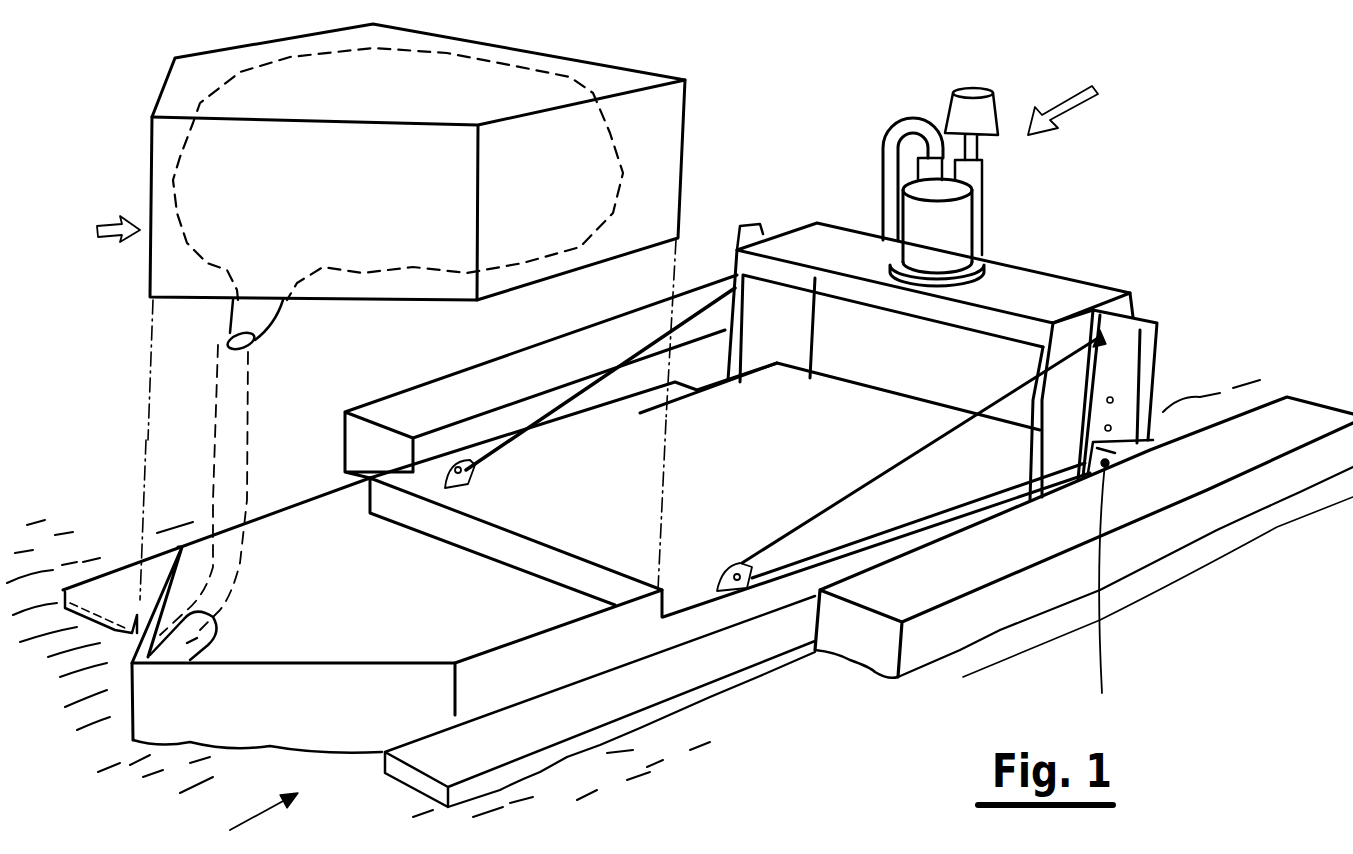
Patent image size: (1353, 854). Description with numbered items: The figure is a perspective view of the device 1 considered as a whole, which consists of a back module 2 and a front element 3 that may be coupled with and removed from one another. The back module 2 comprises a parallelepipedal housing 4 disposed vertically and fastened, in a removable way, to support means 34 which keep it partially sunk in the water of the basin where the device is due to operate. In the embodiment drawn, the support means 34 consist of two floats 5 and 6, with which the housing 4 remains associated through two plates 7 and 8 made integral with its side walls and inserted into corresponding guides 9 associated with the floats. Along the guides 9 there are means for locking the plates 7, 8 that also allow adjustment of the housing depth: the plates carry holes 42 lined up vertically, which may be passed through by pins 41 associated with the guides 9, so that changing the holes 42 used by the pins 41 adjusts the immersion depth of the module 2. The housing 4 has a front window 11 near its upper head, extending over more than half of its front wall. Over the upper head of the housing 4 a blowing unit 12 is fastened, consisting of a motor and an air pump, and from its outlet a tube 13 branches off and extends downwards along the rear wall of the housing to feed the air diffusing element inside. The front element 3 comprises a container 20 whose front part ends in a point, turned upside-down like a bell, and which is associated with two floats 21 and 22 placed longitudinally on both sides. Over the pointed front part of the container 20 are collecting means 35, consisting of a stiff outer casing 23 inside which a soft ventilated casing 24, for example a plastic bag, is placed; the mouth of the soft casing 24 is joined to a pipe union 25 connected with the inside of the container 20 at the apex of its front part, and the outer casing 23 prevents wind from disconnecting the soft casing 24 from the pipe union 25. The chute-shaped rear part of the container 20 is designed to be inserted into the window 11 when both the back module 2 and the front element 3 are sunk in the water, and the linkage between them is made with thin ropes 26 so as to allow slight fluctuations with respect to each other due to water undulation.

The device 1 is at (1067, 100).
The back module 2 is at (1135, 283).
The front element 3 is at (514, 720).
The housing 4 is at (1063, 290).
The float 5 is at (417, 413).
The float 6 is at (1302, 423).
The plate 7 is at (760, 228).
The plate 8 is at (1165, 330).
The guides 9 is at (1150, 447).
The front window 11 is at (875, 355).
The blowing unit 12 is at (997, 187).
The tube 13 is at (893, 123).
The container 20 is at (718, 510).
The float 21 is at (618, 695).
The float 22 is at (117, 582).
The stiff outer casing 23 is at (152, 110).
The soft ventilated casing 24 is at (648, 64).
The pipe union 25 is at (212, 640).
The thin ropes 26 is at (895, 470).
The support means 34 is at (1138, 580).
The collecting means 35 is at (100, 233).
The pins 41 is at (1109, 591).
The holes 42 is at (1110, 400).